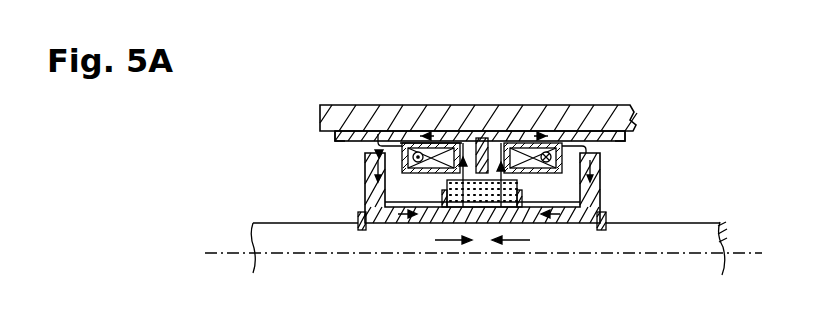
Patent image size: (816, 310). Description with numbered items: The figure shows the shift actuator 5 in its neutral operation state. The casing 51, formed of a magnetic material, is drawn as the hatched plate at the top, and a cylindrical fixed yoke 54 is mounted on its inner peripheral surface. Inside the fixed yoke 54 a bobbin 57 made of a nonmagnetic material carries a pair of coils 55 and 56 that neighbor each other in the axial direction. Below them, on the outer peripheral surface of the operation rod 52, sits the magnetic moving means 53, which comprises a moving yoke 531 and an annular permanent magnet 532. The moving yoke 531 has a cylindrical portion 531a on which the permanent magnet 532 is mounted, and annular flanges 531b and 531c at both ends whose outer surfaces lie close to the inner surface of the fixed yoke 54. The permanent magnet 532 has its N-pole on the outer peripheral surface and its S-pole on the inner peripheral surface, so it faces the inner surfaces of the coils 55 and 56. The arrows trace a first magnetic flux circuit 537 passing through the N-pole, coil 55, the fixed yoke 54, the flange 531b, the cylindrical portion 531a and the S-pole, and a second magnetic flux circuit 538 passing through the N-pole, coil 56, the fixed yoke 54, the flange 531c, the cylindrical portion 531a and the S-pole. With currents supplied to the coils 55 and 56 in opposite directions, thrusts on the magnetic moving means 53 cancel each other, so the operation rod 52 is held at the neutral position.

The shift actuator 5 is at (500, 90).
The casing 51 is at (588, 112).
The operation rod 52 is at (692, 235).
The magnetic moving means 53 is at (335, 193).
The moving yoke 531 is at (601, 188).
The cylindrical portion 531a is at (418, 223).
The flange 531b is at (627, 133).
The flange 531c is at (337, 131).
The permanent magnet 532 is at (519, 187).
The first magnetic flux circuit 537 is at (560, 132).
The second magnetic flux circuit 538 is at (408, 141).
The fixed yoke 54 is at (378, 140).
The coil 55 is at (522, 143).
The coil 56 is at (447, 143).
The bobbin 57 is at (481, 138).